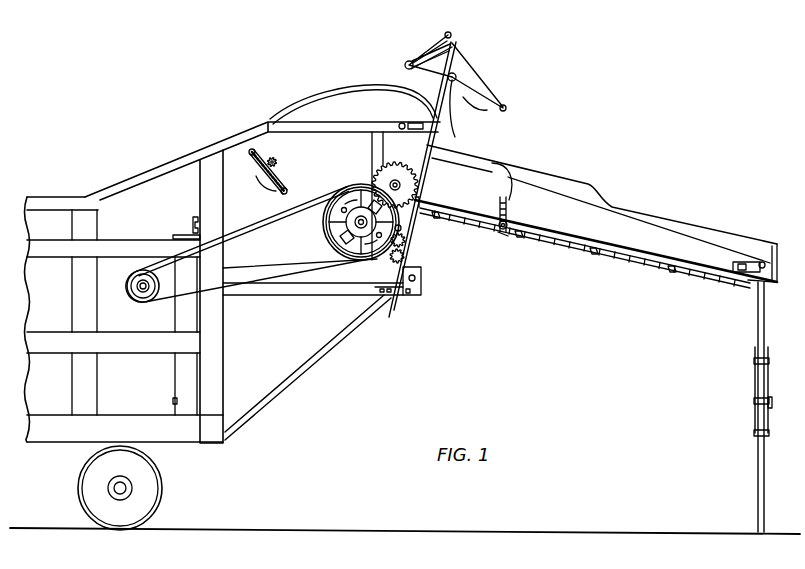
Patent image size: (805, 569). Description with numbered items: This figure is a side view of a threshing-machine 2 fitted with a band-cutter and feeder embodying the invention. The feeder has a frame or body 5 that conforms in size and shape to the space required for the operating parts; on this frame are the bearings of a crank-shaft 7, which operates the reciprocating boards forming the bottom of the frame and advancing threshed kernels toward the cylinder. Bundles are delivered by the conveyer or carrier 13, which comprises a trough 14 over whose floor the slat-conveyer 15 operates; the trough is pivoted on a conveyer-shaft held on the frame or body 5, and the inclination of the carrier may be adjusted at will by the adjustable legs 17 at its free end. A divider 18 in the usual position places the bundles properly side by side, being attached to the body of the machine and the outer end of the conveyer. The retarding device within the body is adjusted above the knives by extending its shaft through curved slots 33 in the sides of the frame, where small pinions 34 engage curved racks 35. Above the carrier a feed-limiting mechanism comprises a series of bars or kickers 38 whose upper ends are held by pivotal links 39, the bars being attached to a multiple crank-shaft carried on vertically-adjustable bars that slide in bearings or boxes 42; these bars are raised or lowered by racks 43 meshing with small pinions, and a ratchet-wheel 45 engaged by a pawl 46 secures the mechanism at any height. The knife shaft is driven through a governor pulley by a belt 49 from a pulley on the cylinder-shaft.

The threshing-machine 2 is at (124, 363).
The frame or body of the band-cutter and feeder 5 is at (242, 131).
The crank-shaft 7 is at (420, 279).
The conveyer or carrier 13 is at (596, 239).
The trough 14 is at (502, 233).
The slat-conveyer 15 is at (628, 277).
The adjustable legs 17 is at (768, 378).
The divider 18 is at (533, 173).
The slots 33 is at (283, 178).
The small pinions 34 is at (277, 160).
The curved racks 35 is at (257, 179).
The bars or kickers 38 is at (490, 90).
The pivotal links 39 is at (442, 37).
The bearings or boxes 42 is at (449, 137).
The racks 43 is at (405, 256).
The ratchet-wheel 45 is at (405, 247).
The pawl 46 is at (405, 234).
The belt 49 is at (266, 230).